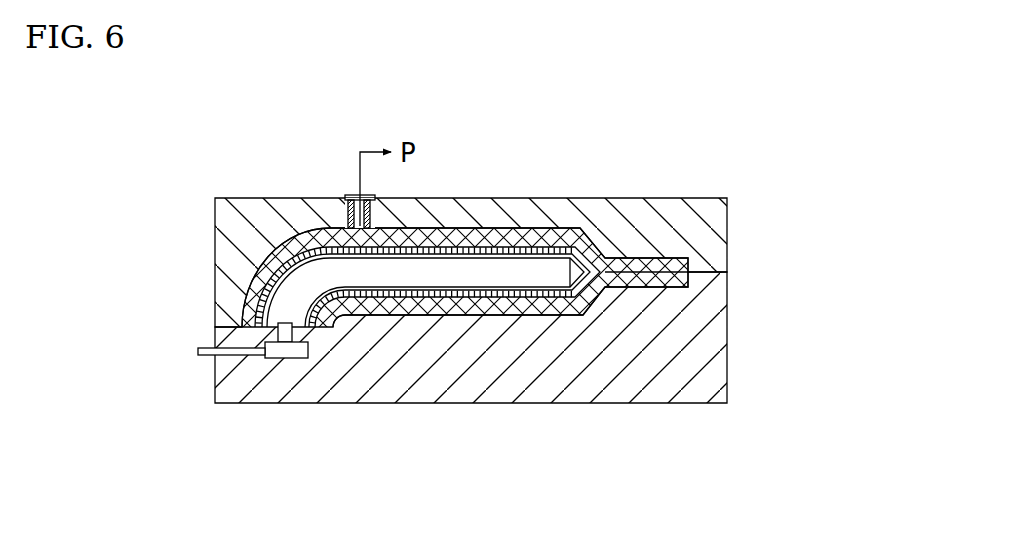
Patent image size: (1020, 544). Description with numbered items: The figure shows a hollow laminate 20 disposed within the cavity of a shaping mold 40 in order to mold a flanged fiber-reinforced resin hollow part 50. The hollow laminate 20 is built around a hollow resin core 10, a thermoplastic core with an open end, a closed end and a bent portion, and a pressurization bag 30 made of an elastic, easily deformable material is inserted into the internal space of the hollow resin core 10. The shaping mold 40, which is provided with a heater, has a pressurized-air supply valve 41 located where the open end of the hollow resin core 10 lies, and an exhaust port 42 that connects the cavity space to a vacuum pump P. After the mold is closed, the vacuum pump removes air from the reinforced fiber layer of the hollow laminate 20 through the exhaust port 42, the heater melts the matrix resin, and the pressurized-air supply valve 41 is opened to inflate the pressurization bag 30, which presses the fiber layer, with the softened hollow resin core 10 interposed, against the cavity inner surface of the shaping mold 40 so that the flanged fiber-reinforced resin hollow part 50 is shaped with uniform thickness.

The hollow resin core 10 is at (428, 251).
The hollow laminate 20 is at (495, 226).
The pressurization bag 30 is at (470, 292).
The shaping mold 40 is at (702, 212).
The pressurized-air supply valve 41 is at (281, 352).
The exhaust port 42 is at (348, 196).
The flanged fiber-reinforced resin hollow part 50 is at (465, 226).